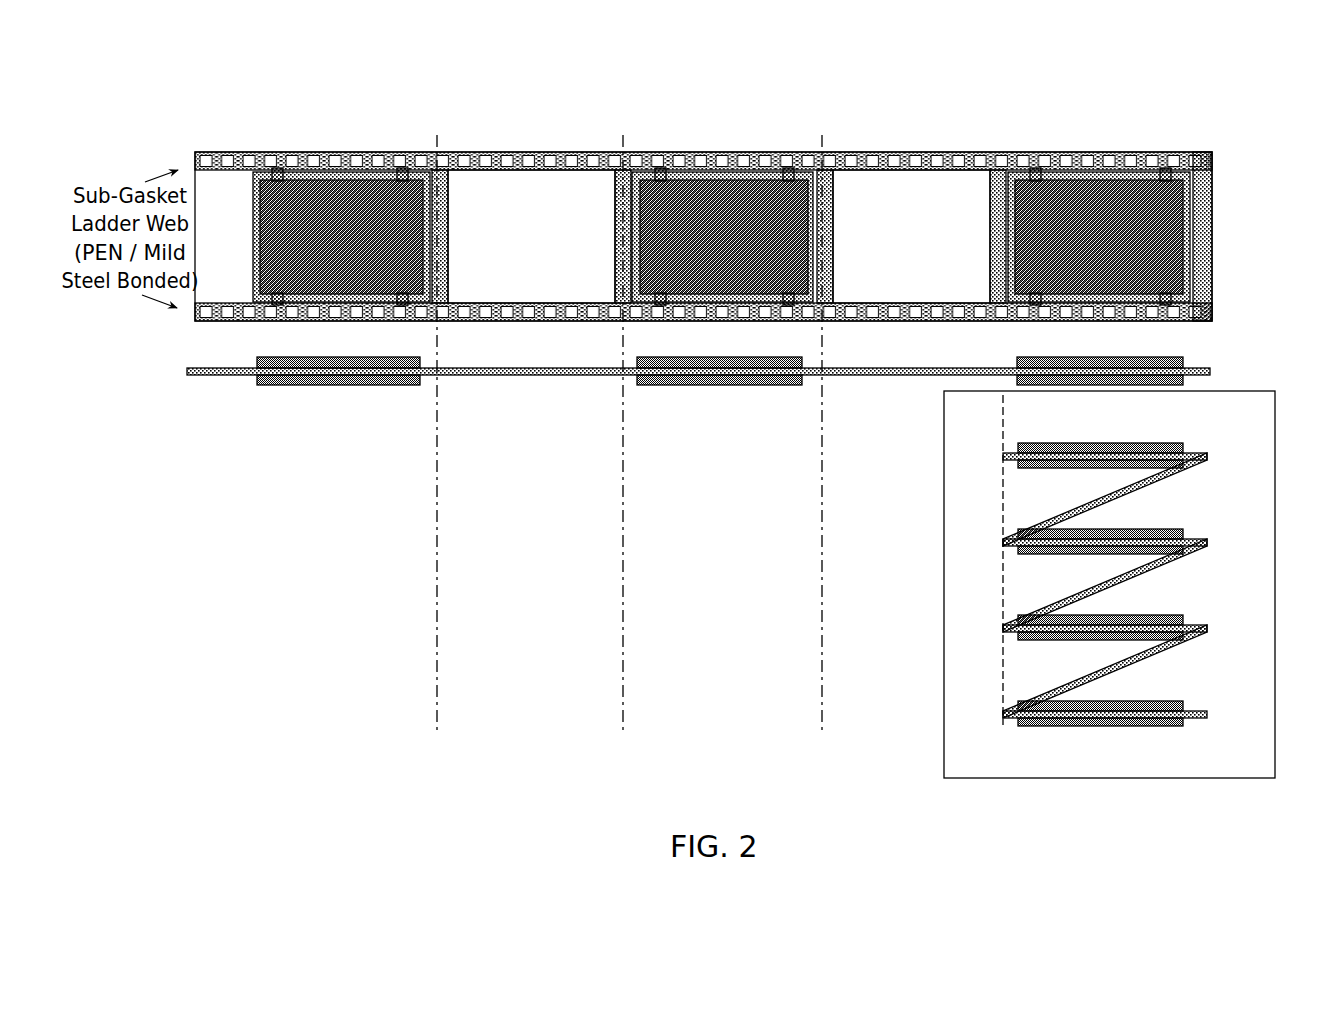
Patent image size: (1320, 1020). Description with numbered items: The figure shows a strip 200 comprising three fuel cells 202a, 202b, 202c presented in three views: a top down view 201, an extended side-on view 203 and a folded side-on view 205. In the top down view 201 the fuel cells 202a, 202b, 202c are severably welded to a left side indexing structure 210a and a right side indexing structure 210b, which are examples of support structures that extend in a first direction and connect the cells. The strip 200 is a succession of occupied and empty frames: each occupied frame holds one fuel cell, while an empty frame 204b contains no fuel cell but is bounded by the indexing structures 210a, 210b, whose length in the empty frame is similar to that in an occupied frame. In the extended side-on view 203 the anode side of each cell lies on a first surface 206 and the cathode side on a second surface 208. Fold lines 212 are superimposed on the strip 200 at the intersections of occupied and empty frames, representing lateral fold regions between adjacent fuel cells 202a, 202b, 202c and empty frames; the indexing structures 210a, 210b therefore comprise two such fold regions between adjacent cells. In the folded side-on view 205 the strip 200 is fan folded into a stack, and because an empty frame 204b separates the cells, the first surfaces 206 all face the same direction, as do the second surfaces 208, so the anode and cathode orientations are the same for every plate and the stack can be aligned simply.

The strip 200 is at (1228, 223).
The top down view 201 is at (1222, 248).
The fuel cell 202a is at (305, 133).
The fuel cell 202b is at (722, 133).
The fuel cell 202c is at (1100, 133).
The extended side-on view 203 is at (1237, 367).
The empty frame 204b is at (523, 132).
The folded side-on view 205 is at (928, 522).
The first surface 206 is at (277, 357).
The second surface 208 is at (270, 385).
The left side indexing structure 210a is at (505, 173).
The right side indexing structure 210b is at (560, 302).
The fold lines 212 is at (623, 658).